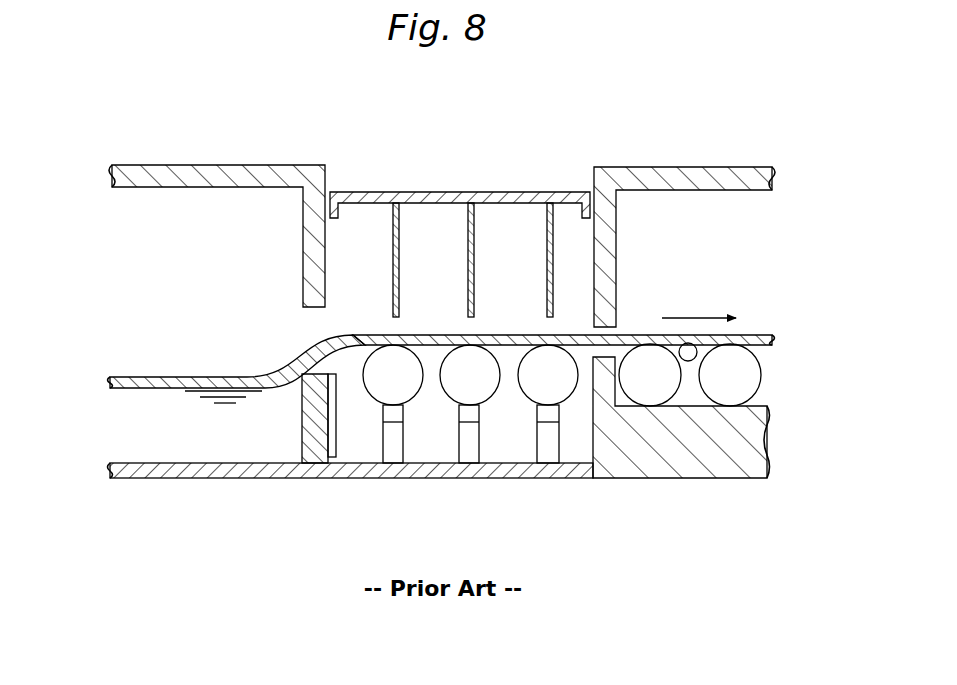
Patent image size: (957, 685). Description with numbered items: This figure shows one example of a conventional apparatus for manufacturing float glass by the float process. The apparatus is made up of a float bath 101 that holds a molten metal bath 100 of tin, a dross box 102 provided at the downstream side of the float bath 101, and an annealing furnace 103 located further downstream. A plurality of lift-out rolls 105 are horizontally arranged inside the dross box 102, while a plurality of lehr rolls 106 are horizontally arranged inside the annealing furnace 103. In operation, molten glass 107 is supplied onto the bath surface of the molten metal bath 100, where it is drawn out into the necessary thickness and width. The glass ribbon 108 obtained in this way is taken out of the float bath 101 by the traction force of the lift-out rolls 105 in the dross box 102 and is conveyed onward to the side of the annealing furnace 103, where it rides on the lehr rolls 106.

The molten metal bath 100 is at (195, 455).
The float bath 101 is at (213, 146).
The dross box 102 is at (512, 186).
The annealing furnace 103 is at (694, 148).
The lift-out rolls 105 is at (380, 395).
The lehr rolls 106 is at (723, 395).
The molten glass 107 is at (148, 376).
The glass ribbon 108 is at (425, 334).